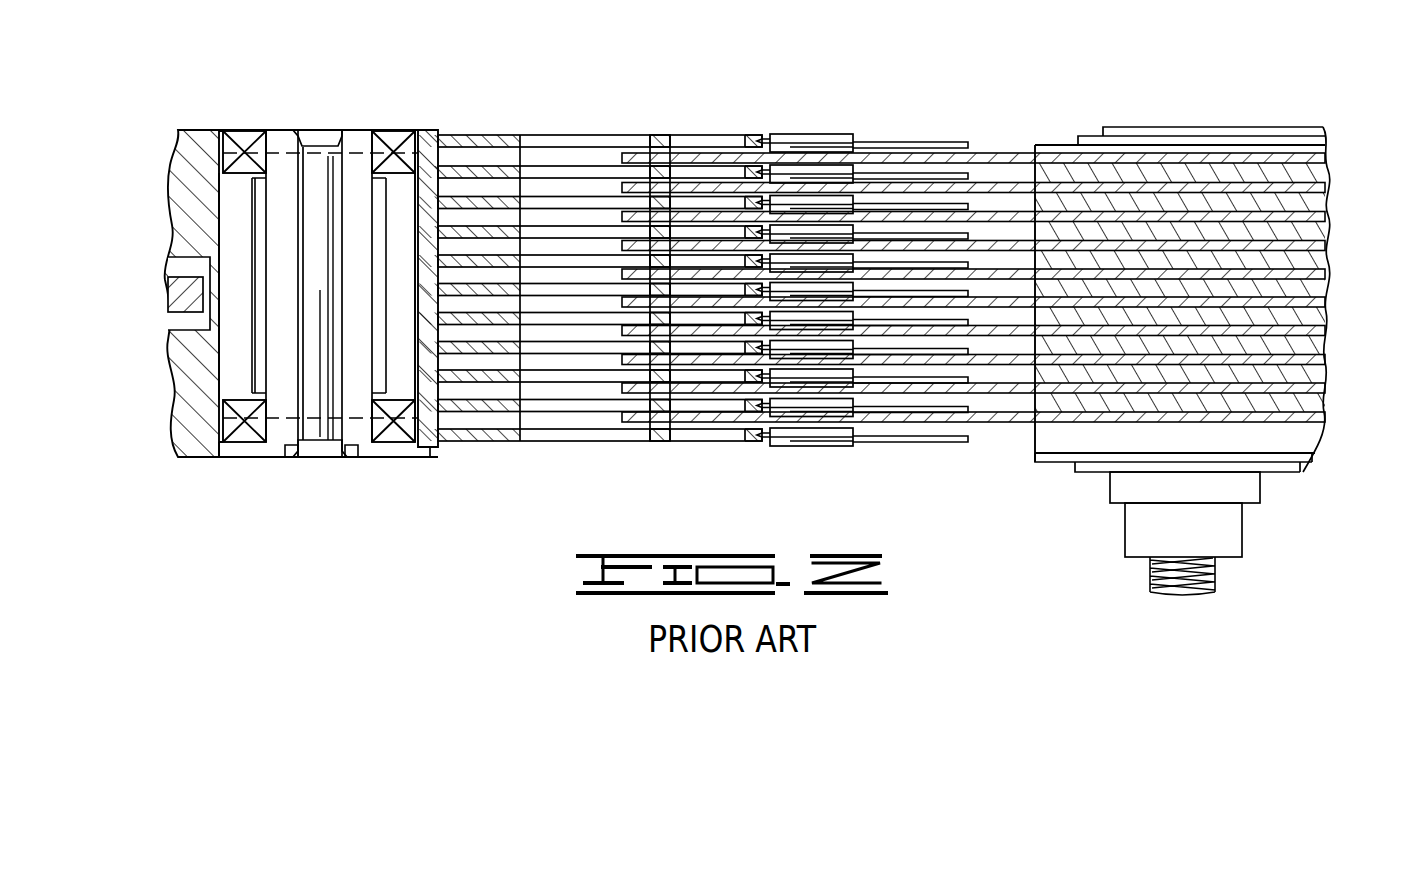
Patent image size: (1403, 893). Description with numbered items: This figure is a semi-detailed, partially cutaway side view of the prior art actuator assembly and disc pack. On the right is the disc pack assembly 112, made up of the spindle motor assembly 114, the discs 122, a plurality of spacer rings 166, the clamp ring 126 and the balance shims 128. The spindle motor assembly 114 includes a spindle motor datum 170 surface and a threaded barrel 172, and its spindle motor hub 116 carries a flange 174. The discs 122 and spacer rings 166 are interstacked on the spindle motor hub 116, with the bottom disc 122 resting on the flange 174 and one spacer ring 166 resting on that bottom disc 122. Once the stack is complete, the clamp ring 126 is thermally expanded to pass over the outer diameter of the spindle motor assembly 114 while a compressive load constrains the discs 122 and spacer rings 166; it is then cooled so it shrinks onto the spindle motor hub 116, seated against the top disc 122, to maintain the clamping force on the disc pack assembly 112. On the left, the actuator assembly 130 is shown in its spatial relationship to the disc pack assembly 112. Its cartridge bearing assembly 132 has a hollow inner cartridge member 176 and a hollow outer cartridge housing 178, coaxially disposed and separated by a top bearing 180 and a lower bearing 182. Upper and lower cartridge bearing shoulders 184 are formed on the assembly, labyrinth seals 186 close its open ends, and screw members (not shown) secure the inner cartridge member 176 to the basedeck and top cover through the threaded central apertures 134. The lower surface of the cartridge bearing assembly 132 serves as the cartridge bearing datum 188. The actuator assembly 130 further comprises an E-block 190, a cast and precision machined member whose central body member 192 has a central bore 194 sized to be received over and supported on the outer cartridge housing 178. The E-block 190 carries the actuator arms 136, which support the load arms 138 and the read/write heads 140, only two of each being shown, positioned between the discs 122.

The disc pack assembly 112 is at (1007, 324).
The spindle motor assembly 114 is at (1210, 544).
The spindle motor hub 116 is at (1260, 127).
The discs 122 is at (986, 153).
The clamp ring 126 is at (1110, 145).
The balance shims 128 is at (1057, 145).
The actuator assembly 130 is at (666, 280).
The cartridge bearing assembly 132 is at (262, 126).
The threaded central apertures 134 is at (310, 128).
The actuator arms 136 is at (706, 138).
The load arms 138 is at (918, 146).
The read/write heads 140 is at (975, 147).
The spacer rings 166 is at (1328, 182).
The spindle motor datum surface 170 is at (1133, 557).
The threaded barrel 172 is at (1215, 575).
The flange 174 is at (1035, 435).
The inner cartridge member 176 is at (322, 458).
The outer cartridge housing 178 is at (218, 372).
The top bearing 180 is at (246, 180).
The lower bearing 182 is at (223, 398).
The cartridge bearing shoulders 184 is at (358, 147).
The labyrinth seals 186 is at (243, 458).
The cartridge bearing datum 188 is at (296, 458).
The E-block 190 is at (470, 134).
The central body member 192 is at (518, 134).
The central bore 194 is at (388, 465).